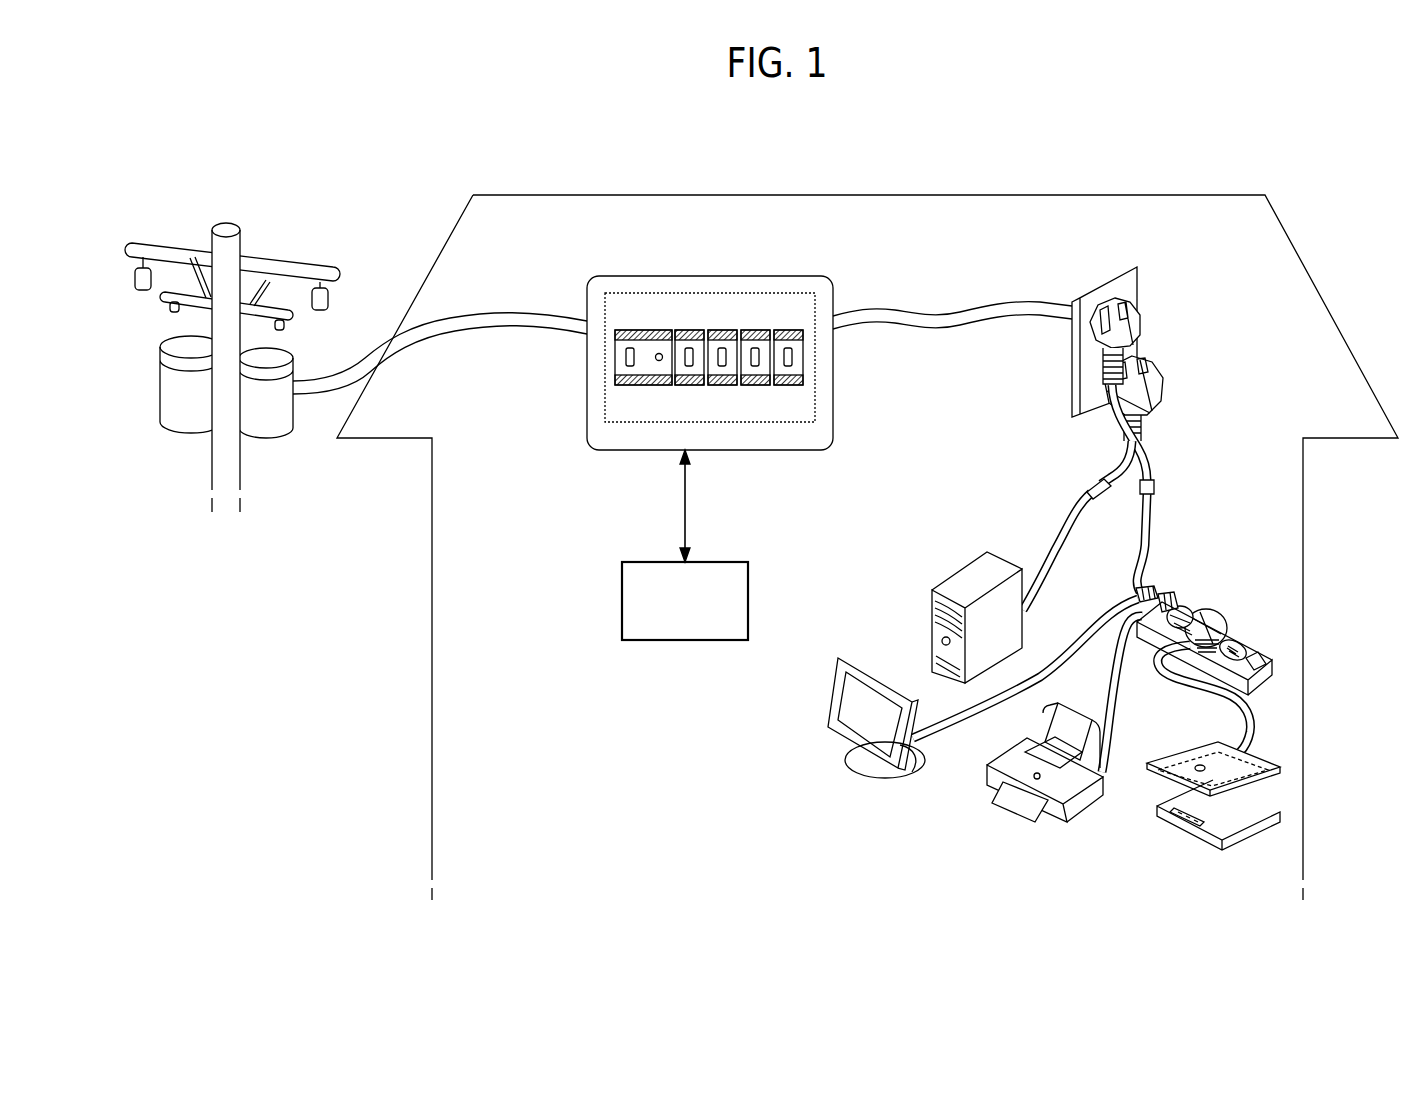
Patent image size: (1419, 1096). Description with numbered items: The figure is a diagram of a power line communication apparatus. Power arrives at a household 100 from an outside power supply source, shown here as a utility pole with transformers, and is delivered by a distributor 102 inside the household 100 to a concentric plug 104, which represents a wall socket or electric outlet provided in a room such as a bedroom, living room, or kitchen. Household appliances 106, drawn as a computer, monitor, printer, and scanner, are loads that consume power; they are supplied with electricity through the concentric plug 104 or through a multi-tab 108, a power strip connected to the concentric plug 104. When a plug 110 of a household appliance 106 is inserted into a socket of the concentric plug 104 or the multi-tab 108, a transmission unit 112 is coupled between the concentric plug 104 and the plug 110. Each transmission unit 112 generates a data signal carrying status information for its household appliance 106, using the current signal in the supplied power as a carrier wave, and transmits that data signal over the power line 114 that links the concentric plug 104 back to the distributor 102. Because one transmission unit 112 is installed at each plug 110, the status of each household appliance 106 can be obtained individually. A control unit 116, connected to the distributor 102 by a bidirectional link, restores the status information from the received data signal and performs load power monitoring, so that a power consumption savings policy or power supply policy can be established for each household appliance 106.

The household 100 is at (677, 195).
The distributor 102 is at (628, 283).
The concentric plug 104 is at (1134, 268).
The household appliances 106 is at (952, 582).
The multi-tab 108 is at (1253, 643).
The plug 110 is at (1163, 384).
The transmission unit 112 is at (1078, 392).
The power line 114 is at (943, 312).
The control unit 116 is at (622, 598).